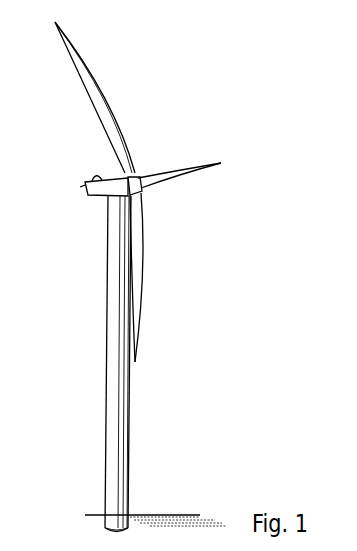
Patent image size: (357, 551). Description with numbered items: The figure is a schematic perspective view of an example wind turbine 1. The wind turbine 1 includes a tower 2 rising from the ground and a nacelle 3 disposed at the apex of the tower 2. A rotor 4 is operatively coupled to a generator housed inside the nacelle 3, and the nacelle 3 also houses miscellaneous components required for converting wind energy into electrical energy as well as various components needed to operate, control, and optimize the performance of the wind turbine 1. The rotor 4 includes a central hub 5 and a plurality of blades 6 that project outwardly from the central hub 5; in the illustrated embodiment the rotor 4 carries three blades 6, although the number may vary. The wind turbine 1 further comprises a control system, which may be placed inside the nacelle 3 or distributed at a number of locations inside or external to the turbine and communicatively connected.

The wind turbine 1 is at (226, 74).
The tower 2 is at (107, 332).
The nacelle 3 is at (86, 188).
The rotor 4 is at (226, 223).
The central hub 5 is at (138, 177).
The blades 6 is at (95, 107).